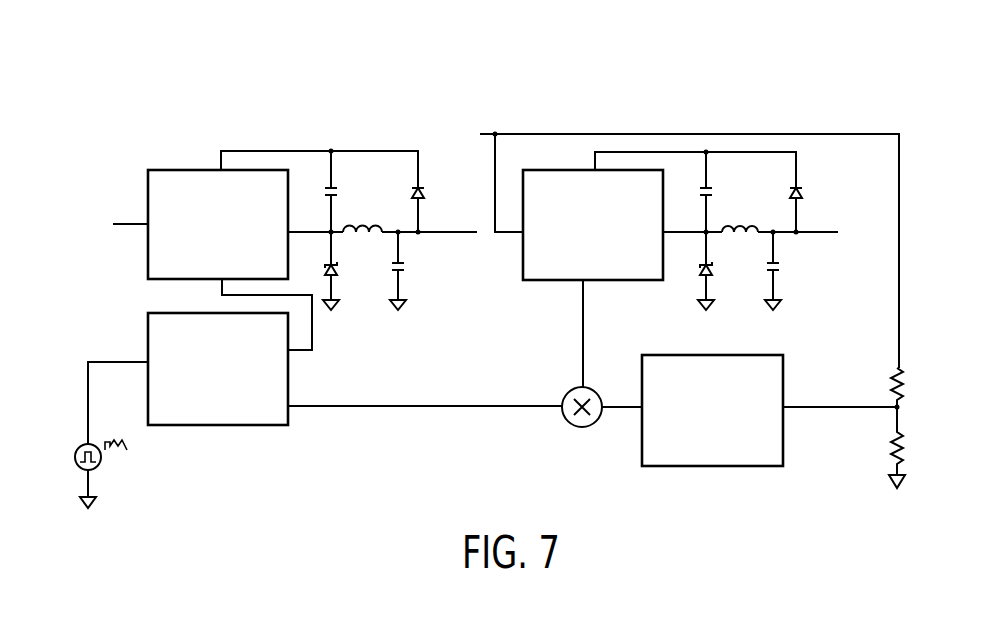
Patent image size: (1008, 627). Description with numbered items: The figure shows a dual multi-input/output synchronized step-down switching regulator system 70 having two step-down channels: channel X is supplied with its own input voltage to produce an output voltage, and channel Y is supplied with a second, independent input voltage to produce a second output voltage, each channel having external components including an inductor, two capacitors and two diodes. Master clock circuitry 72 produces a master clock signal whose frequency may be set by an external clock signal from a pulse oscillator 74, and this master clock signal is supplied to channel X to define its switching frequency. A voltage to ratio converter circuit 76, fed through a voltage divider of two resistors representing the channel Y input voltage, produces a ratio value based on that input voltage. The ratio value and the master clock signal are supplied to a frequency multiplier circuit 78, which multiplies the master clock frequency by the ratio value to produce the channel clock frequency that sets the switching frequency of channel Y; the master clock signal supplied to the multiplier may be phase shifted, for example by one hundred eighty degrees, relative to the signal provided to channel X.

The dual multi-input/output synchronized step-down switching regulator system 70 is at (508, 74).
The master clock circuitry 72 is at (256, 426).
The pulse oscillator 74 is at (74, 462).
The voltage to ratio converter circuit 76 is at (704, 467).
The frequency multiplier circuit 78 is at (582, 428).